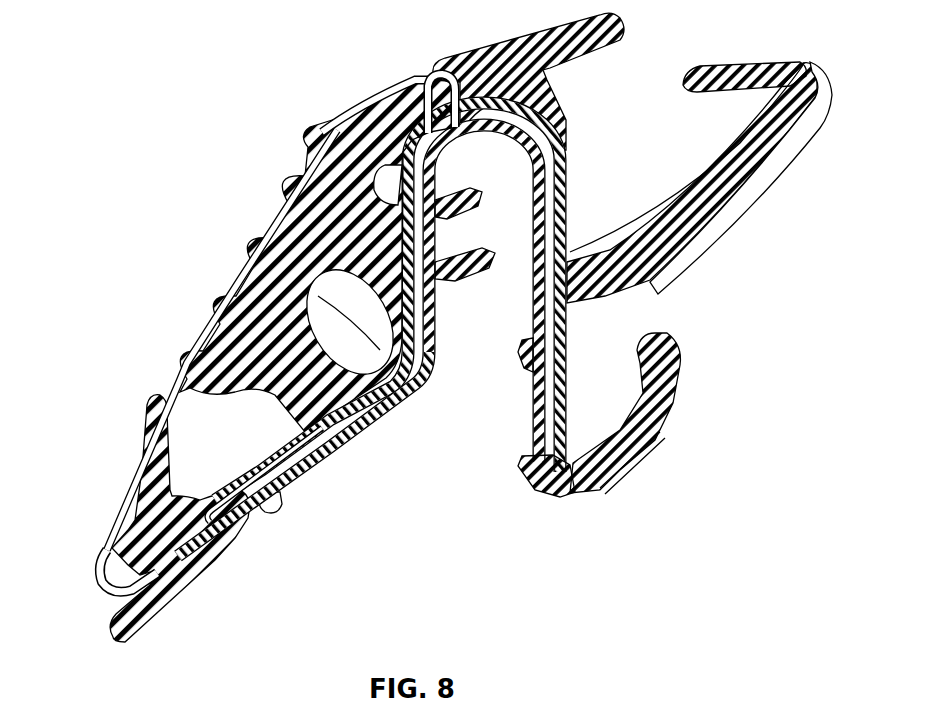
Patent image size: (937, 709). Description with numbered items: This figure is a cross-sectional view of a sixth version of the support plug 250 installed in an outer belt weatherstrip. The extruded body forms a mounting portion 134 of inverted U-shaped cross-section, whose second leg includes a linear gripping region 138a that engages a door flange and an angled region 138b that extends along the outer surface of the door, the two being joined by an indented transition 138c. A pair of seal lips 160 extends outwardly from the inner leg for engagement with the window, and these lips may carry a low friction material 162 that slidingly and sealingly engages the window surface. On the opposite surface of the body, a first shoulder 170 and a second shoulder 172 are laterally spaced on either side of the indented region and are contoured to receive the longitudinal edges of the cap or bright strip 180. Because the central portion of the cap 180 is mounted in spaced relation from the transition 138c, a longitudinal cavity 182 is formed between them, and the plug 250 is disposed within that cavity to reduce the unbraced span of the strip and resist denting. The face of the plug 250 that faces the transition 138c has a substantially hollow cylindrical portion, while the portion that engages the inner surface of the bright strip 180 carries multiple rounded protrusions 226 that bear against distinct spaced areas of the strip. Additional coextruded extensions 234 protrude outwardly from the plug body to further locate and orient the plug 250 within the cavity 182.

The mounting portion 134 is at (570, 186).
The linear gripping region 138a is at (450, 247).
The angled region 138b is at (335, 445).
The transition 138c is at (400, 398).
The seal lips 160 is at (698, 218).
The low friction material 162 is at (800, 170).
The first shoulder 170 is at (412, 92).
The second shoulder 172 is at (100, 562).
The cap or bright strip 180 is at (125, 497).
The cavity 182 is at (200, 395).
The rounded protrusions 226 is at (265, 262).
The coextruded extensions 234 is at (382, 192).
The plug 250 is at (400, 360).